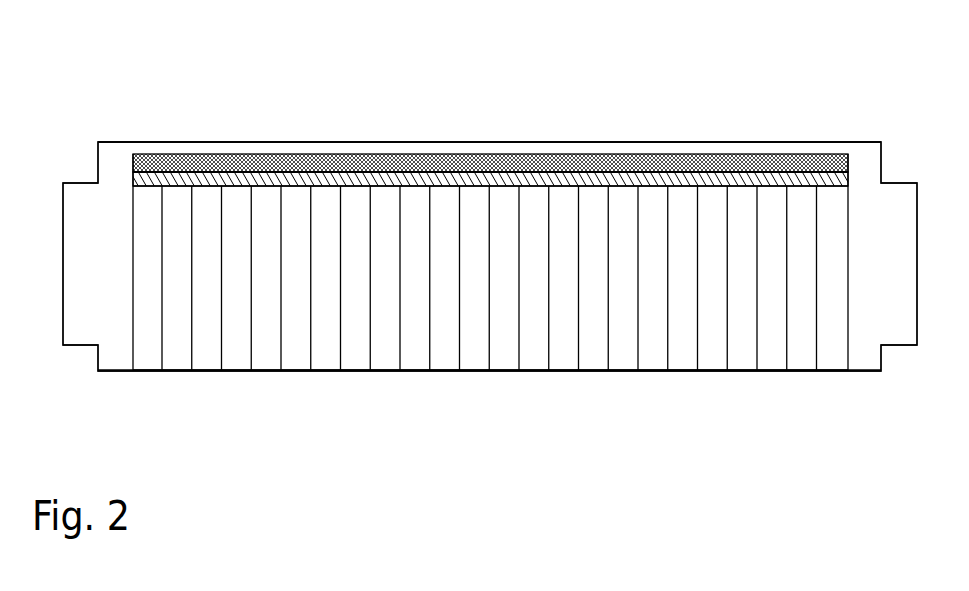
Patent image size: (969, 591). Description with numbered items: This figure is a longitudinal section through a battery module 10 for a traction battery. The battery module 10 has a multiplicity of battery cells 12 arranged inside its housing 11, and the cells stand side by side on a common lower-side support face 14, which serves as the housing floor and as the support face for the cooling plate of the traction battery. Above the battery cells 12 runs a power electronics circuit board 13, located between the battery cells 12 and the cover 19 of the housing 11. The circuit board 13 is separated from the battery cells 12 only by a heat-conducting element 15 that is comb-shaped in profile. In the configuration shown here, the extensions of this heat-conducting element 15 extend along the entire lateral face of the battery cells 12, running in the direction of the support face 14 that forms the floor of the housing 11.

The battery module 10 is at (229, 84).
The housing 11 is at (75, 196).
The battery cells 12 is at (453, 220).
The power electronics circuit board 13 is at (512, 180).
The support face 14 is at (417, 370).
The heat-conducting element 15 is at (580, 186).
The cover 19 is at (355, 146).